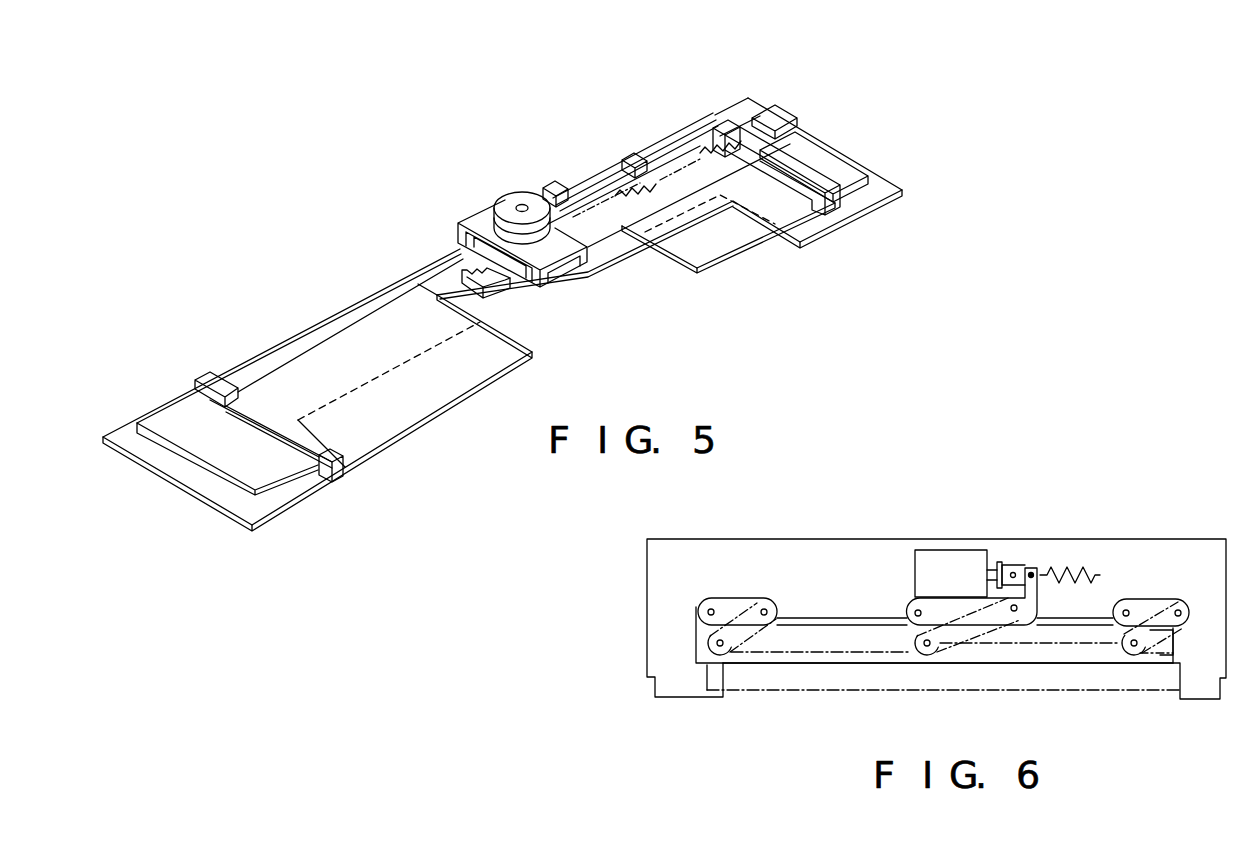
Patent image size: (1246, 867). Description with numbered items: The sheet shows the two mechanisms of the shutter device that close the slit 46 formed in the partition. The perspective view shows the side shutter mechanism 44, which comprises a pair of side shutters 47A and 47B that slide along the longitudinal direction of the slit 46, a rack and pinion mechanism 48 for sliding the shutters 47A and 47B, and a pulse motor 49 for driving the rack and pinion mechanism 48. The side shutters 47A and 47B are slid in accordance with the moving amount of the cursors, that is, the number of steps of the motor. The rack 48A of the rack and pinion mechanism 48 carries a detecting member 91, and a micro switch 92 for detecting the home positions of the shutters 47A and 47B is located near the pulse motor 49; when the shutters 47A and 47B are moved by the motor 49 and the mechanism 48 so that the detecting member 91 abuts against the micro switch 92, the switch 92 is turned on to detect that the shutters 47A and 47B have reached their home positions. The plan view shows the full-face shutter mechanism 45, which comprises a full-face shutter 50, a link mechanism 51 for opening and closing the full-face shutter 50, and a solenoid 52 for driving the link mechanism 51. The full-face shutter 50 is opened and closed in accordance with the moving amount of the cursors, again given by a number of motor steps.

In FIG. 5, the side shutter mechanism 44 is at (456, 203).
In FIG. 6, the full-face shutter mechanism 45 is at (858, 530).
In FIG. 5, the slit 46 is at (565, 298).
In FIG. 6, the slit 46 is at (795, 683).
In FIG. 5, the side shutter 47A is at (440, 380).
In FIG. 5, the side shutter 47B is at (716, 238).
In FIG. 5, the rack and pinion mechanism 48 is at (468, 270).
In FIG. 5, the rack 48A is at (592, 205).
In FIG. 5, the pulse motor 49 is at (512, 197).
In FIG. 6, the full-face shutter 50 is at (1176, 644).
In FIG. 6, the link mechanism 51 is at (745, 598).
In FIG. 6, the solenoid 52 is at (970, 556).
In FIG. 5, the detecting member 91 is at (635, 153).
In FIG. 5, the micro switch 92 is at (563, 180).